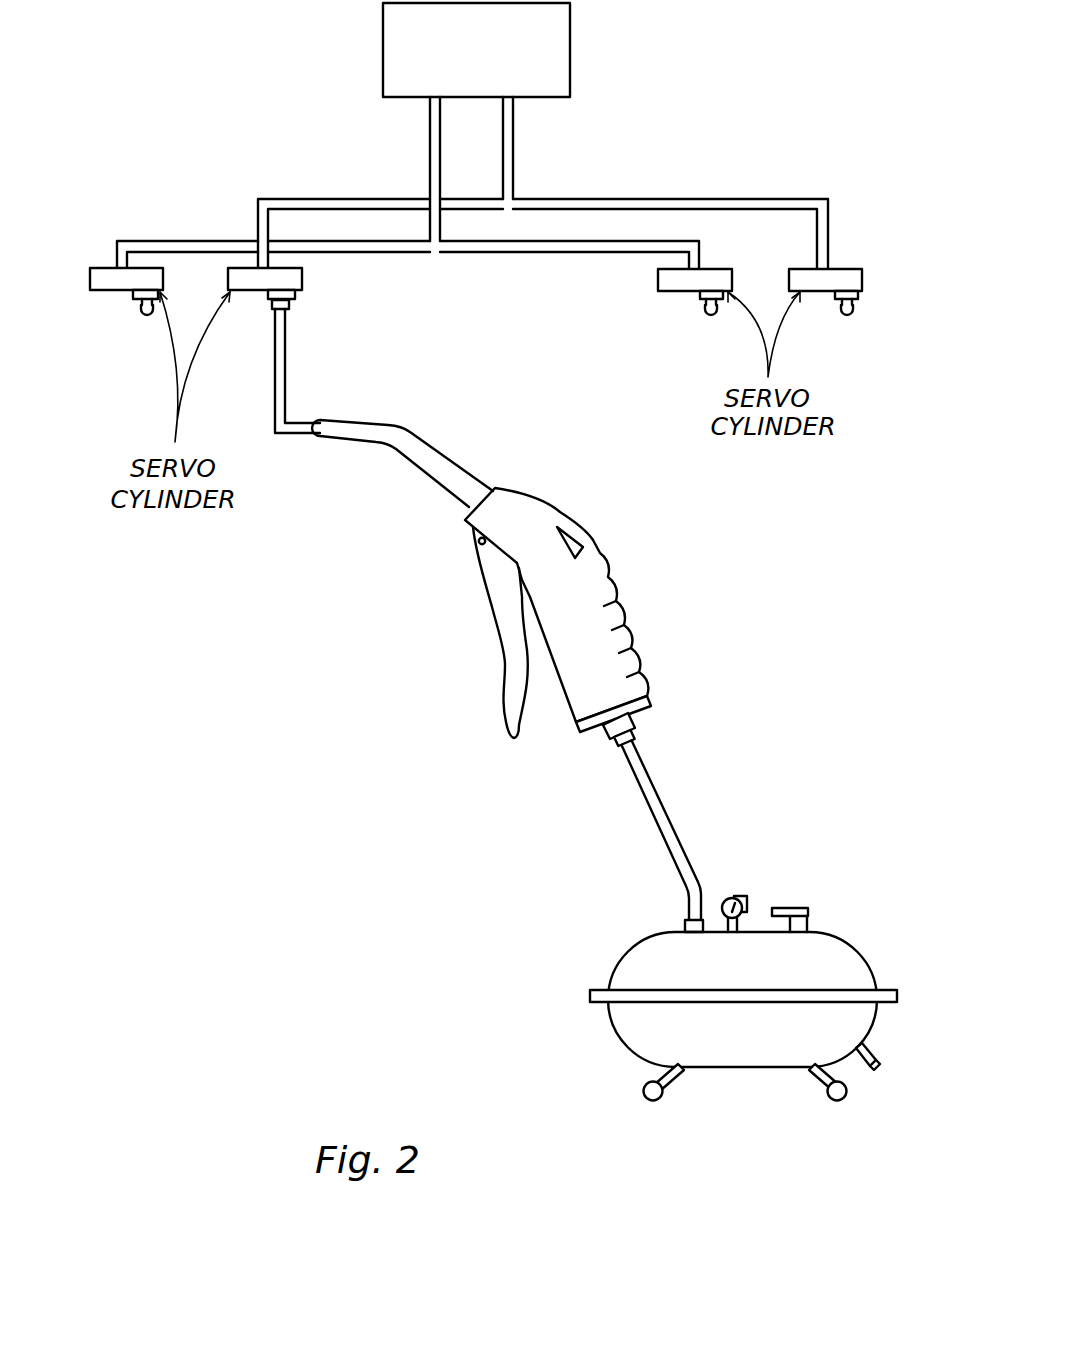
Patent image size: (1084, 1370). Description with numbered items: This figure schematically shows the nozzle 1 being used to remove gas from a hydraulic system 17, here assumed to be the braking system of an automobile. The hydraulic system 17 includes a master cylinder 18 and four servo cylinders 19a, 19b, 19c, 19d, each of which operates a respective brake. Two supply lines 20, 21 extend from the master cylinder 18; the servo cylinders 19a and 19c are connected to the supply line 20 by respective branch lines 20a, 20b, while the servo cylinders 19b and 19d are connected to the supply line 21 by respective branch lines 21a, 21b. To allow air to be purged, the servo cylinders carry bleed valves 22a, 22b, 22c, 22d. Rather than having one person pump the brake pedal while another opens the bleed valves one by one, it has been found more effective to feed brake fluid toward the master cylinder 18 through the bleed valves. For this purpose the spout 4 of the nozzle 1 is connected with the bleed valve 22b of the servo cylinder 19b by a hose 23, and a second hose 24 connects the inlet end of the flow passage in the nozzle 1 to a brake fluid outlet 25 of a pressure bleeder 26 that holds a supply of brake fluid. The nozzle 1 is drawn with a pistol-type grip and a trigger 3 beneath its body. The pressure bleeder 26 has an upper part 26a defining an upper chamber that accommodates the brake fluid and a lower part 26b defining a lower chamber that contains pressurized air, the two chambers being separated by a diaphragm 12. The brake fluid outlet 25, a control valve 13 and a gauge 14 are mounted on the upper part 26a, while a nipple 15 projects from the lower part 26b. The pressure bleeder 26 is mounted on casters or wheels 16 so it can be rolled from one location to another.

The nozzle 1 is at (647, 550).
The trigger 3 is at (500, 648).
The spout 4 is at (425, 443).
The diaphragm 12 is at (895, 992).
The control valve 13 is at (800, 912).
The gauge 14 is at (740, 897).
The nipple 15 is at (874, 1064).
The rolling elements 16 is at (665, 1083).
The hydraulic system 17 is at (288, 88).
The master cylinder 18 is at (570, 48).
The servo cylinder 19a is at (108, 267).
The servo cylinder 19b is at (302, 276).
The servo cylinder 19c is at (658, 283).
The servo cylinder 19d is at (862, 280).
The supply line 20 is at (430, 126).
The branch line 20a is at (215, 241).
The branch line 20b is at (699, 248).
The supply line 21 is at (513, 126).
The branch line 21a is at (313, 199).
The branch line 21b is at (698, 199).
The bleed valve 22a is at (141, 308).
The bleed valve 22b is at (287, 306).
The bleed valve 22c is at (707, 308).
The bleed valve 22d is at (853, 310).
The hose 23 is at (287, 373).
The second hose 24 is at (663, 803).
The brake fluid outlet 25 is at (685, 922).
The pressure bleeder 26 is at (685, 916).
The upper part 26a is at (622, 968).
The lower part 26b is at (620, 1028).